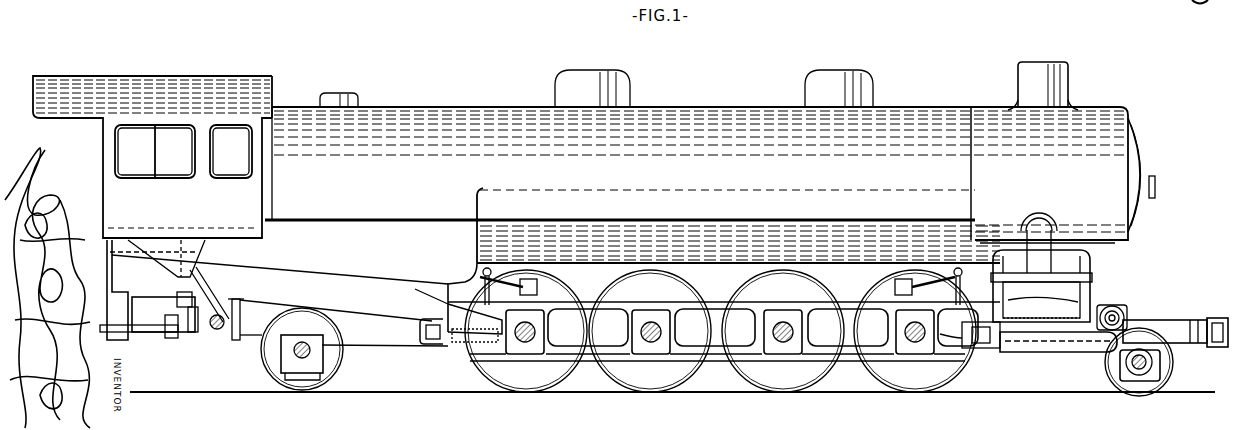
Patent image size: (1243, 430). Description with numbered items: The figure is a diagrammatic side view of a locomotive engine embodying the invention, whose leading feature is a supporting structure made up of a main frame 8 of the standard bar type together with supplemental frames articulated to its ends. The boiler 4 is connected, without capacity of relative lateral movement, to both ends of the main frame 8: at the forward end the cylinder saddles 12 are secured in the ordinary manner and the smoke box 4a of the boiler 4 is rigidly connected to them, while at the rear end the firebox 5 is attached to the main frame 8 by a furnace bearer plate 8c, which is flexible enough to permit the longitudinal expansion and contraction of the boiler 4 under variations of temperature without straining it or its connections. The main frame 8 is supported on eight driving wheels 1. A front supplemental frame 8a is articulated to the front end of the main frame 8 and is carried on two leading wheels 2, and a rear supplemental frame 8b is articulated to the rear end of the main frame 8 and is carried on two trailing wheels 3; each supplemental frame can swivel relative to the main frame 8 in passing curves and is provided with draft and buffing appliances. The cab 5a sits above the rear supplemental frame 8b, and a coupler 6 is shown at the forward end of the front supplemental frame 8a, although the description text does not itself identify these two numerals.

The driving wheels 1 is at (640, 382).
The leading wheels 2 is at (1173, 383).
The trailing wheels 3 is at (325, 372).
The boiler 4 is at (696, 166).
The smoke box 4a is at (1063, 151).
The firebox 5 is at (279, 291).
The cab 5a is at (212, 114).
The coupler 6 is at (1224, 318).
The main frame 8 is at (712, 302).
The front supplemental frame 8a is at (1050, 352).
The rear supplemental frame 8b is at (221, 337).
The furnace bearer plate 8c is at (447, 300).
The cylinder saddles 12 is at (1062, 303).